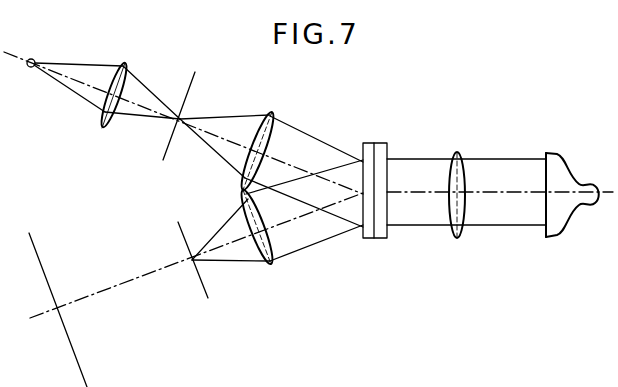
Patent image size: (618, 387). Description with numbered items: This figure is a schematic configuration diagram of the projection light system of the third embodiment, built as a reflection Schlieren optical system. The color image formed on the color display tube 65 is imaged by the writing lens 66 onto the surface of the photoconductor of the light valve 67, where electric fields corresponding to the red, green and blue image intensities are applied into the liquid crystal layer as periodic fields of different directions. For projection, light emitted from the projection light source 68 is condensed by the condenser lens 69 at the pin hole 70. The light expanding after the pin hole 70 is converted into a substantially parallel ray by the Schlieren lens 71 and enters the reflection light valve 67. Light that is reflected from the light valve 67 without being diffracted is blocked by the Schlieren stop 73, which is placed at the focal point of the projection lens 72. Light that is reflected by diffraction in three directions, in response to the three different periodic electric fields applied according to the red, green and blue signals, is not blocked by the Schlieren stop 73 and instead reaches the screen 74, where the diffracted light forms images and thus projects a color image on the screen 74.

The color display tube 65 is at (566, 168).
The writing lens 66 is at (458, 152).
The light valve 67 is at (385, 133).
The projection light source 68 is at (34, 59).
The condenser lens 69 is at (126, 64).
The pin hole 70 is at (197, 74).
The Schlieren lens 71 is at (282, 106).
The projection lens 72 is at (272, 263).
The Schlieren stop 73 is at (203, 286).
The screen 74 is at (84, 372).